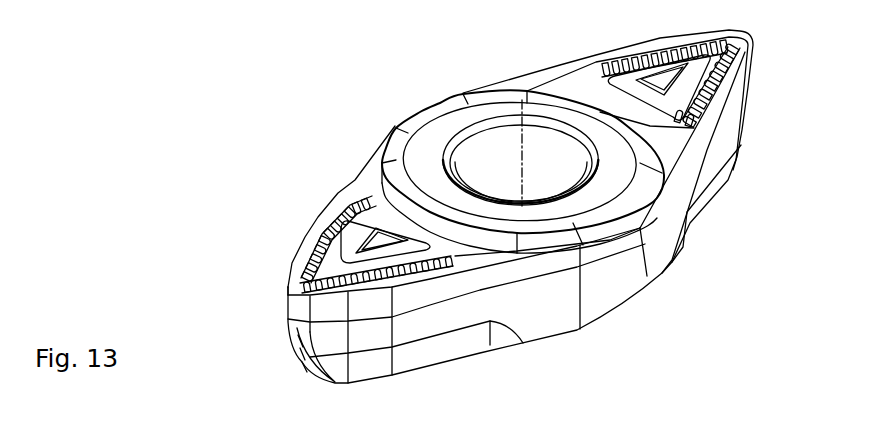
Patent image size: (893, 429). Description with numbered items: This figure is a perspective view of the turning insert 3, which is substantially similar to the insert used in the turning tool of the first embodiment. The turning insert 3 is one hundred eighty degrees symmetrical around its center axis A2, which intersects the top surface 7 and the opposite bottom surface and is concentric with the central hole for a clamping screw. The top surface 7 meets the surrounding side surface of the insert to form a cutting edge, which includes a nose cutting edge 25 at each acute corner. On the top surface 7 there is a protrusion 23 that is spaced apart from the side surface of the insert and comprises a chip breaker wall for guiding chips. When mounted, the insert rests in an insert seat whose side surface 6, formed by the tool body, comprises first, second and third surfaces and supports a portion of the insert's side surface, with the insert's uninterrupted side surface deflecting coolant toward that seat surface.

The turning insert 3 is at (320, 92).
The side surface 6 is at (558, 295).
The top surface 7 is at (378, 197).
The protrusion 23 is at (352, 247).
The nose cutting edge 25 is at (300, 292).
The center axis A2 is at (524, 122).